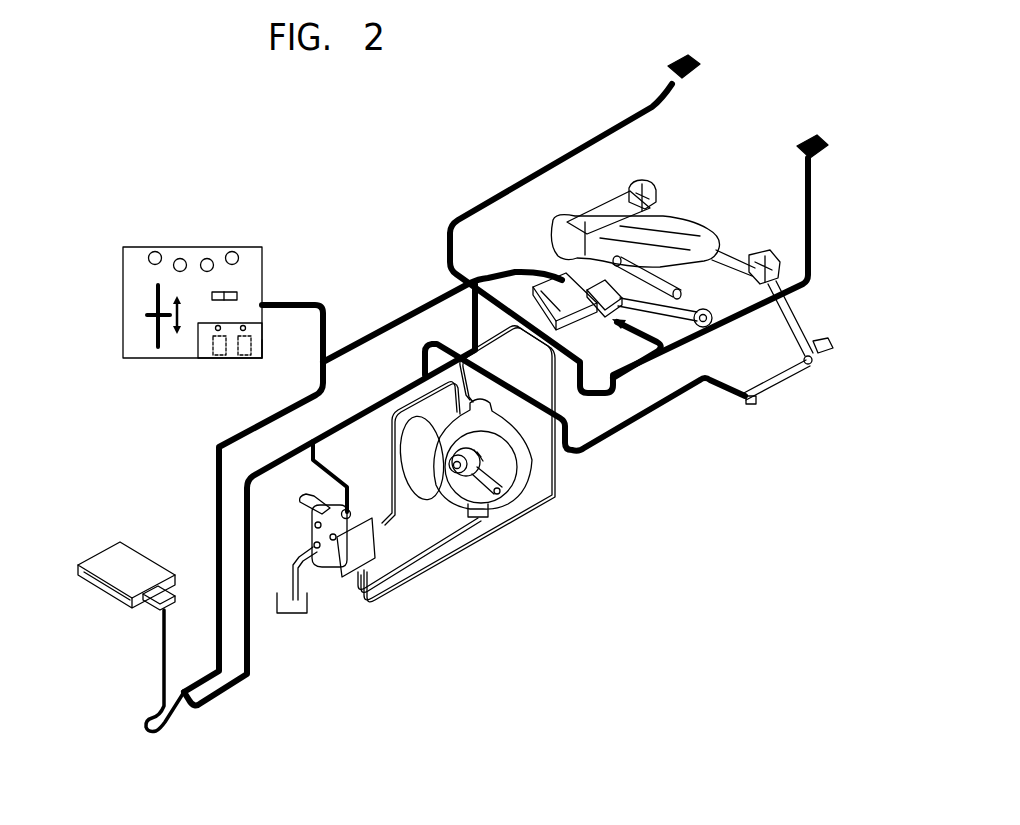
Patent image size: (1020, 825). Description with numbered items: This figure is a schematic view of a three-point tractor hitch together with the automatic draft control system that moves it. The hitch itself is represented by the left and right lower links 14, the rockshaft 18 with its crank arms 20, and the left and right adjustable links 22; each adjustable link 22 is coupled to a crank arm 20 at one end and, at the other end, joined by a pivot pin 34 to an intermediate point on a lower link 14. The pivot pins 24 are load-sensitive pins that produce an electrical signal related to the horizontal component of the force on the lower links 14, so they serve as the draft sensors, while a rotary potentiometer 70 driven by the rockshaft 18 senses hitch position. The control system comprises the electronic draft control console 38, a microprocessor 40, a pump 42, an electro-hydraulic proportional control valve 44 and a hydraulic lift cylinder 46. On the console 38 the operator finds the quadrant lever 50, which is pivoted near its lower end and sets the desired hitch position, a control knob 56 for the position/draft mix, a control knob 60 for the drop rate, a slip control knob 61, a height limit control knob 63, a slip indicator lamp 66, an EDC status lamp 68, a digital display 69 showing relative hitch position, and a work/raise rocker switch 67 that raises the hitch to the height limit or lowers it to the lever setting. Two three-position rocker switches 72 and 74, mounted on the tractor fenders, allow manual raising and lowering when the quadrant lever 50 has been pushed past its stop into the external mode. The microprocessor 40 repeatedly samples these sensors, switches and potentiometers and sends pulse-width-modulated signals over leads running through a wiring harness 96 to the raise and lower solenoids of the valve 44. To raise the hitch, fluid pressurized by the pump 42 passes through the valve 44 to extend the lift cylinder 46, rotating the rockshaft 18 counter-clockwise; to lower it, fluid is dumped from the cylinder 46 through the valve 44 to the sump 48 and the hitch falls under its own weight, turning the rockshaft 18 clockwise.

The lower links 14 is at (675, 338).
The rockshaft 18 is at (730, 330).
The crank arms 20 is at (640, 181).
The adjustable links 22 is at (680, 205).
The pivot pins 24 is at (645, 355).
The pivot pin 34 is at (735, 262).
The electronic draft control console 38 is at (282, 262).
The microprocessor 40 is at (151, 540).
The pump 42 is at (505, 415).
The electro-hydraulic proportional control valve 44 is at (306, 530).
The hydraulic lift cylinder 46 is at (560, 277).
The sump 48 is at (303, 603).
The quadrant lever 50 is at (150, 315).
The control knob 56 is at (207, 258).
The control knob 60 is at (233, 251).
The slip control knob 61 is at (153, 251).
The height limit control knob 63 is at (180, 258).
The slip indicator lamp 66 is at (217, 331).
The work/raise rocker switch 67 is at (240, 296).
The EDC status lamp 68 is at (247, 329).
The digital display 69 is at (258, 360).
The rotary potentiometer 70 is at (557, 226).
The three-position rocker switch 72 is at (697, 74).
The three-position rocker switch 74 is at (828, 152).
The wiring harness 96 is at (314, 440).